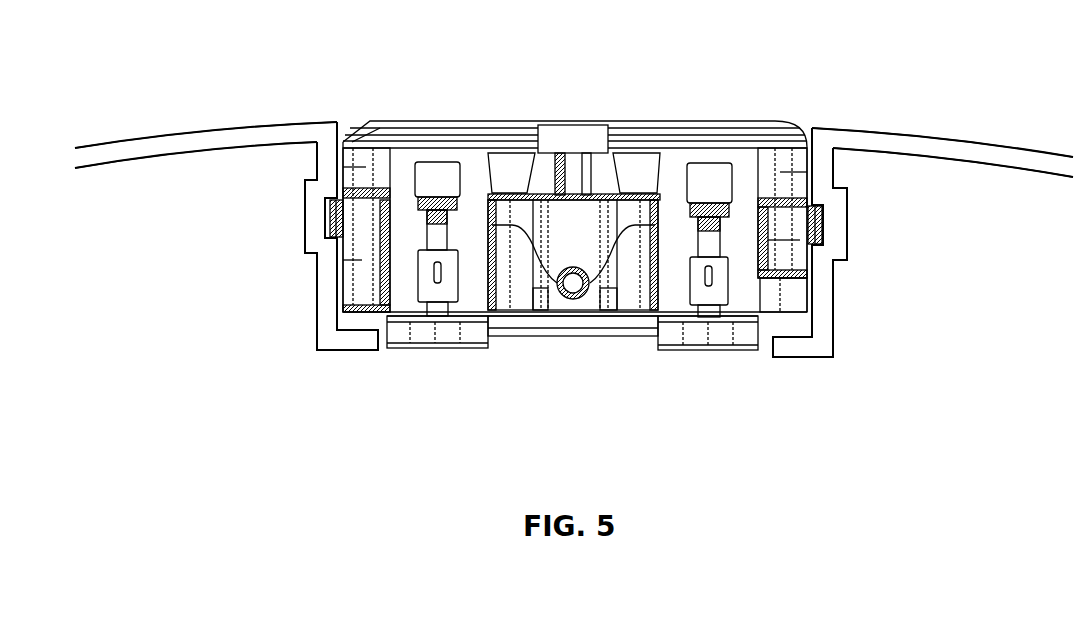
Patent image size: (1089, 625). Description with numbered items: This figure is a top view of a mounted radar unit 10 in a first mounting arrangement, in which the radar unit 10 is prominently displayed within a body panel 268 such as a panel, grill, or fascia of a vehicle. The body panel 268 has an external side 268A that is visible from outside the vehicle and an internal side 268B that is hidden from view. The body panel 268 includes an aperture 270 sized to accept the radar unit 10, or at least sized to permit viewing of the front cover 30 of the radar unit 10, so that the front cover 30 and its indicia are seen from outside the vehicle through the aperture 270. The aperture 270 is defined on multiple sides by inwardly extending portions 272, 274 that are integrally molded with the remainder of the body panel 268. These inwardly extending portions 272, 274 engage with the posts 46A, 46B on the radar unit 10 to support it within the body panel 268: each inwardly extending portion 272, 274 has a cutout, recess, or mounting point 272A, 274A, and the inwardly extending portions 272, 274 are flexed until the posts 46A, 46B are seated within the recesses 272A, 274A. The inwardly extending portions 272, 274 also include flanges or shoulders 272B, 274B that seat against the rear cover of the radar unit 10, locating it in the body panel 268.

The radar unit 10 is at (668, 99).
The front cover 30 is at (465, 118).
The post 46A is at (825, 215).
The post 46B is at (333, 208).
The body panel 268 is at (155, 140).
The external side 268A is at (112, 142).
The internal side 268B is at (202, 152).
The aperture 270 is at (365, 128).
The inwardly extending portion 272 is at (837, 325).
The recess 272A is at (825, 237).
The shoulder 272B is at (795, 358).
The inwardly extending portion 274 is at (316, 320).
The recess 274A is at (345, 208).
The shoulder 274B is at (362, 352).